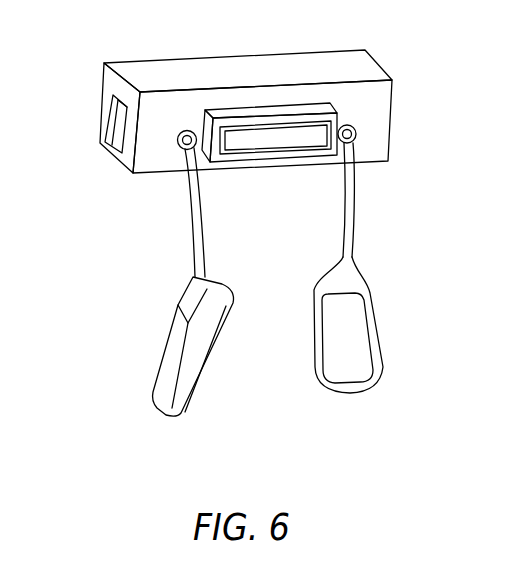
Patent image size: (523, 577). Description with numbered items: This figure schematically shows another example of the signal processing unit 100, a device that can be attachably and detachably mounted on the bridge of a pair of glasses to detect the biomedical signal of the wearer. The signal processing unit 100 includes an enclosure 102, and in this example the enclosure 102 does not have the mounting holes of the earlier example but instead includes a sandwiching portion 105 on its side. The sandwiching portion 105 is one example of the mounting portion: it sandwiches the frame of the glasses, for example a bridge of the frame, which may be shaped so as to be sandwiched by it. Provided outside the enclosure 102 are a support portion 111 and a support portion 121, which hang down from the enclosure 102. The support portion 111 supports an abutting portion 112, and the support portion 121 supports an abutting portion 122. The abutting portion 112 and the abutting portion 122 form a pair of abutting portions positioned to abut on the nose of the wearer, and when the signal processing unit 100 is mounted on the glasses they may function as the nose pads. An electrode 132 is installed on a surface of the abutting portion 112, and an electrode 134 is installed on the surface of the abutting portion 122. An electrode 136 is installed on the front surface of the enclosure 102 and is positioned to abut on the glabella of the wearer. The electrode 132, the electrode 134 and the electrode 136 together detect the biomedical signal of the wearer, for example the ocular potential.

The signal processing unit 100 is at (155, 52).
The enclosure 102 is at (396, 82).
The sandwiching portion 105 is at (117, 122).
The support portion 111 is at (193, 225).
The abutting portion 112 is at (188, 346).
The support portion 121 is at (360, 217).
The abutting portion 122 is at (358, 325).
The electrode 132 is at (200, 385).
The electrode 134 is at (335, 338).
The electrode 136 is at (260, 143).